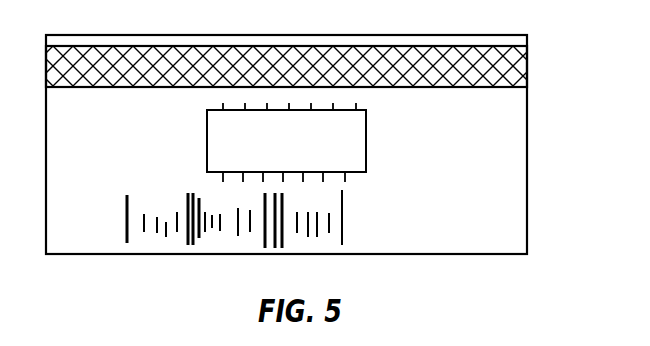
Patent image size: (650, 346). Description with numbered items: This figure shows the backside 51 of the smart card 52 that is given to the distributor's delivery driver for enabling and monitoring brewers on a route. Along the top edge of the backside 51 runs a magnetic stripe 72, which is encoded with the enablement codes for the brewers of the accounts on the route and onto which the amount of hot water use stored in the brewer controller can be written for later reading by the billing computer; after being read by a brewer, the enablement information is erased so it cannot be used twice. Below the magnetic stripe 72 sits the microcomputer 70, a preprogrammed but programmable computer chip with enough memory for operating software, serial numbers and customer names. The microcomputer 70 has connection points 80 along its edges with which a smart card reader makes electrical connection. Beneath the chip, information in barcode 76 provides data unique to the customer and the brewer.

The backside 51 is at (512, 225).
The smart card 52 is at (513, 128).
The magnetic stripe 72 is at (527, 64).
The microcomputer 70 is at (207, 153).
The barcode 76 is at (157, 199).
The connection points 80 is at (303, 182).